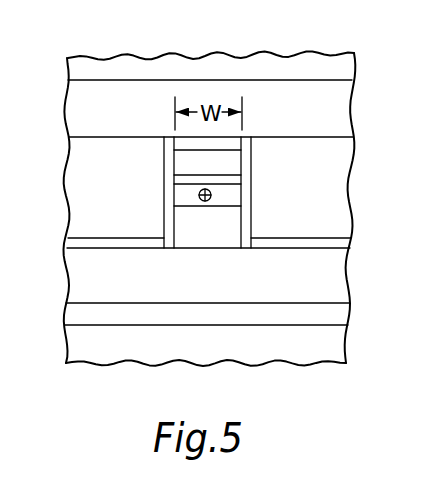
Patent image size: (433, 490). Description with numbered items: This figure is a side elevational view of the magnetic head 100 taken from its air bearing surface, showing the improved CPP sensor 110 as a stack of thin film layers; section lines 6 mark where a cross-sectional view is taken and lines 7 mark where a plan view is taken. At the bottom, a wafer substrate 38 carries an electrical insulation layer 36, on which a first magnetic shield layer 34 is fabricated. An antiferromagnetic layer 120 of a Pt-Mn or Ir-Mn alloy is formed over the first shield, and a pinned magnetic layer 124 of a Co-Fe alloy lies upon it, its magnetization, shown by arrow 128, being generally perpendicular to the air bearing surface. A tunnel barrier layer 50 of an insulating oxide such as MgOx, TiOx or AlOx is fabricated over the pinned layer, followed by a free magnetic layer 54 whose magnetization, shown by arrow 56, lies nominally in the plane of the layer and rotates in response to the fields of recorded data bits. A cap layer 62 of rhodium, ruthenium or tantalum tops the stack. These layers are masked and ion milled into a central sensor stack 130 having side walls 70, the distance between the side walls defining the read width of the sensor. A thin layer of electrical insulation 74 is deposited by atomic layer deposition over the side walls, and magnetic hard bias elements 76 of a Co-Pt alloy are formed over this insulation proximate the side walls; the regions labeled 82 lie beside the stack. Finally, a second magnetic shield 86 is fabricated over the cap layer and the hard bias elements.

The magnetic head 100 is at (58, 54).
The CPP sensor 110 is at (120, 50).
The section lines 6- 6 is at (213, 50).
The lines 7- 7 is at (60, 137).
The cap layer 62 is at (184, 138).
The second magnetic shield 86 is at (329, 123).
The side wall 82 is at (126, 163).
The free magnetic layer 54 is at (174, 161).
The arrow indicating magnetization direction of the free magnetic layer 56 is at (194, 163).
The tunnel barrier layer 50 is at (174, 181).
The arrow indicating magnetization direction of the pinned magnetic layer 128 is at (199, 195).
The pinned magnetic layer 124 is at (230, 197).
The side walls 70 is at (174, 219).
The thin layer of electrical insulation 74 is at (95, 239).
The magnetic hard bias elements 76 is at (71, 195).
The antiferromagnetic layer 120 is at (228, 242).
The central sensor stack 130 is at (208, 252).
The first magnetic shield layer 34 is at (333, 293).
The electrical insulation layer 36 is at (335, 317).
The wafer substrate 38 is at (330, 356).